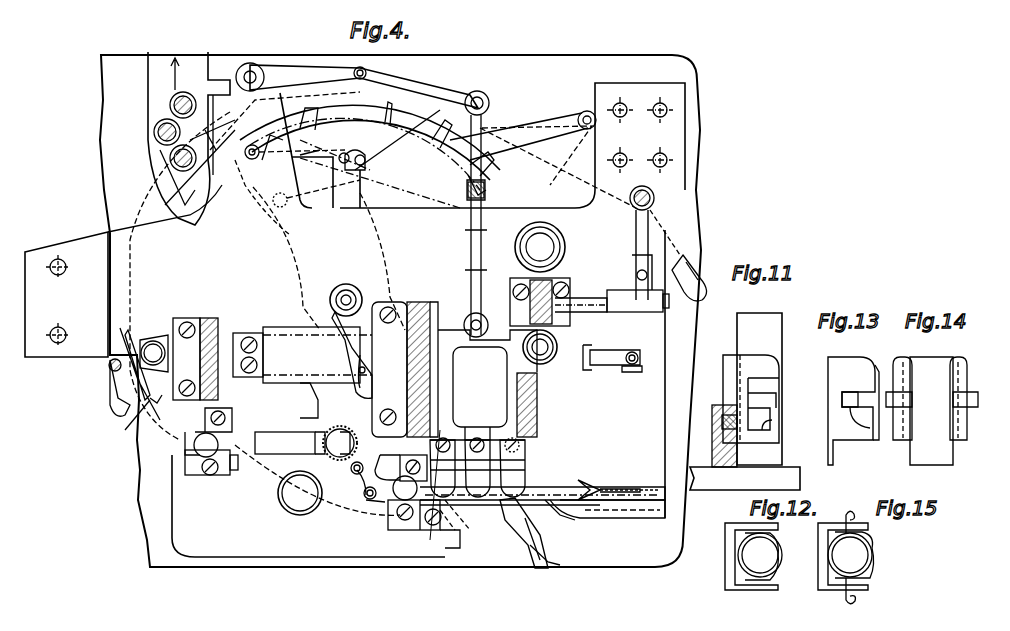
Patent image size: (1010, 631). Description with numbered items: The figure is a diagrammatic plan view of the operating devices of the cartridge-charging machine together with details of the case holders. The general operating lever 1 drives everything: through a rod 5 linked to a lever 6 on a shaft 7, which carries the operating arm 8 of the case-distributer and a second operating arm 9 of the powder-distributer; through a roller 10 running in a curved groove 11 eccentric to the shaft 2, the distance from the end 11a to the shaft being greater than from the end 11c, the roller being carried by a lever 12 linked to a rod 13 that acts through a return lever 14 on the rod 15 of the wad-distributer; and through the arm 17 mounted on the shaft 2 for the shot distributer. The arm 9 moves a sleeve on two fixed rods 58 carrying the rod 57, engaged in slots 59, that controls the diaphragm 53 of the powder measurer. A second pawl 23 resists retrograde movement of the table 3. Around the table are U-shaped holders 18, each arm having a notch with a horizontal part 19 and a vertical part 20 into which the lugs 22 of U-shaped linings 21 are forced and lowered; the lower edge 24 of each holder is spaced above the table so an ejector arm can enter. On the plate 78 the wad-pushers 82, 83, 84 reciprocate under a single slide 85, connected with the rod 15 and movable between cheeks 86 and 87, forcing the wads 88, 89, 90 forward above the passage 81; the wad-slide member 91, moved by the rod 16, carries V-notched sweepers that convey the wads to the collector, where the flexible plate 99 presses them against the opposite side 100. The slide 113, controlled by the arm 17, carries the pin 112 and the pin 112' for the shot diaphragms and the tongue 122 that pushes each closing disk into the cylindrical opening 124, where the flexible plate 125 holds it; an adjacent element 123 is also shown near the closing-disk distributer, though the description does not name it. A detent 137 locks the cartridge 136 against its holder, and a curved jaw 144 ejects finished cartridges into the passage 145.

In FIG. 4, the operating lever 1 is at (552, 560).
In FIG. 4, the shaft 2 is at (348, 293).
In FIG. 4, the table 3 is at (140, 220).
In FIG. 11, the table 3 is at (790, 480).
In FIG. 4, the rod 5 is at (527, 130).
In FIG. 4, the lever 6 is at (620, 182).
In FIG. 4, the shaft 7 is at (632, 205).
In FIG. 4, the operating arm 8 is at (690, 250).
In FIG. 4, the operating arm 9 is at (636, 238).
In FIG. 4, the roller 10 is at (366, 157).
In FIG. 4, the curved groove 11 is at (370, 150).
In FIG. 4, the end of groove 11a is at (248, 173).
In FIG. 4, the end of groove 11c is at (363, 170).
In FIG. 4, the lever 12 is at (276, 165).
In FIG. 4, the rod 13 is at (352, 105).
In FIG. 4, the return lever 14 is at (310, 68).
In FIG. 4, the rod 15 is at (471, 291).
In FIG. 4, the rod 16 is at (560, 512).
In FIG. 4, the arm 17 is at (320, 322).
In FIG. 11, the holder 18 is at (730, 372).
In FIG. 12, the holder 18 is at (728, 548).
In FIG. 15, the holder 18 is at (822, 548).
In FIG. 11, the horizontal part of notch 19 is at (762, 378).
In FIG. 11, the vertical part of notch 20 is at (752, 402).
In FIG. 13, the lining 21 is at (845, 376).
In FIG. 14, the lining 21 is at (922, 458).
In FIG. 15, the lining 21 is at (874, 573).
In FIG. 13, the lug 22 is at (870, 428).
In FIG. 14, the lug 22 is at (965, 402).
In FIG. 15, the lug 22 is at (847, 512).
In FIG. 4, the second pawl 23 is at (125, 430).
In FIG. 11, the lower edge of holder 24 is at (770, 428).
In FIG. 4, the diaphragm 53 is at (589, 360).
In FIG. 4, the rod 57 is at (630, 372).
In FIG. 4, the fixed rods 58 is at (593, 297).
In FIG. 4, the slot 59 is at (605, 348).
In FIG. 4, the plate 78 is at (645, 522).
In FIG. 4, the passage 81 is at (550, 486).
In FIG. 4, the wad-pusher 82 is at (520, 462).
In FIG. 4, the wad-pusher 83 is at (482, 440).
In FIG. 4, the wad-pusher 84 is at (460, 440).
In FIG. 4, the slide 85 is at (456, 370).
In FIG. 4, the cheek 86 is at (540, 417).
In FIG. 4, the cheek 87 is at (456, 322).
In FIG. 4, the wad 88 is at (505, 530).
In FIG. 4, the wad 89 is at (472, 520).
In FIG. 4, the wad 90 is at (430, 540).
In FIG. 4, the member 91 is at (592, 484).
In FIG. 4, the flexible plate 99 is at (390, 512).
In FIG. 4, the opposite side of collector 100 is at (398, 470).
In FIG. 4, the pin 112 is at (356, 482).
In FIG. 4, the pin 112' is at (354, 495).
In FIG. 4, the slide 113 is at (318, 396).
In FIG. 4, the tongue 122 is at (312, 440).
In FIG. 4, the roller 123 is at (220, 444).
In FIG. 4, the cylindrical opening 124 is at (228, 418).
In FIG. 4, the flexible plate 125 is at (238, 465).
In FIG. 4, the cartridge 136 is at (128, 340).
In FIG. 4, the detent 137 is at (128, 390).
In FIG. 4, the curved jaw 144 is at (200, 150).
In FIG. 4, the passage 145 is at (188, 68).